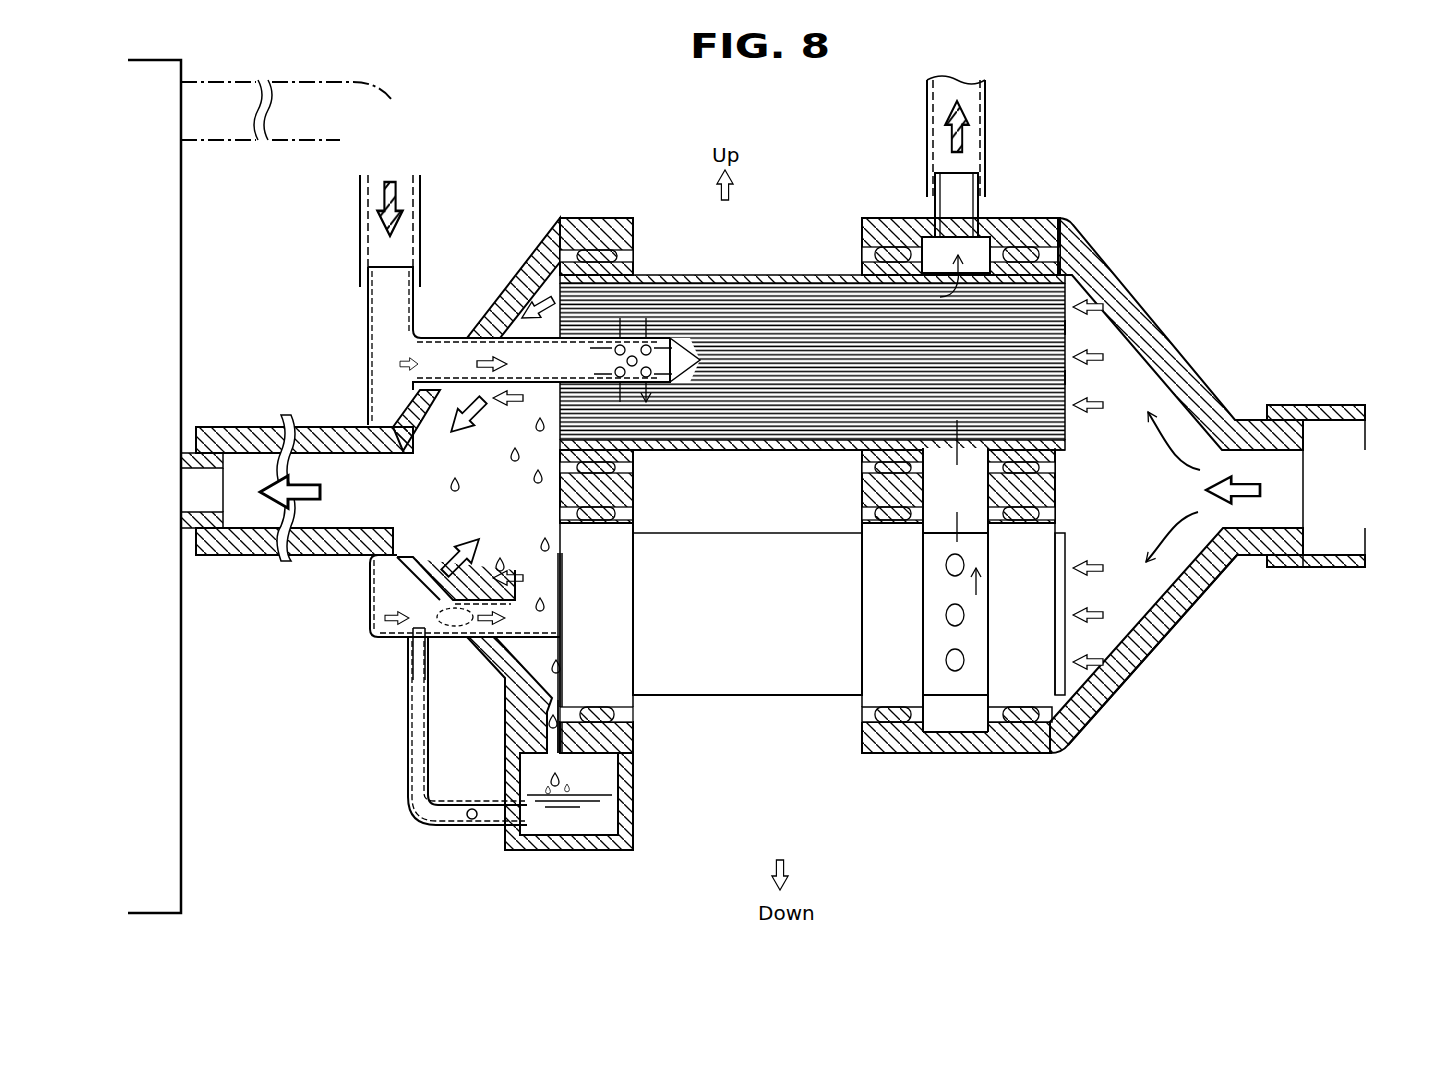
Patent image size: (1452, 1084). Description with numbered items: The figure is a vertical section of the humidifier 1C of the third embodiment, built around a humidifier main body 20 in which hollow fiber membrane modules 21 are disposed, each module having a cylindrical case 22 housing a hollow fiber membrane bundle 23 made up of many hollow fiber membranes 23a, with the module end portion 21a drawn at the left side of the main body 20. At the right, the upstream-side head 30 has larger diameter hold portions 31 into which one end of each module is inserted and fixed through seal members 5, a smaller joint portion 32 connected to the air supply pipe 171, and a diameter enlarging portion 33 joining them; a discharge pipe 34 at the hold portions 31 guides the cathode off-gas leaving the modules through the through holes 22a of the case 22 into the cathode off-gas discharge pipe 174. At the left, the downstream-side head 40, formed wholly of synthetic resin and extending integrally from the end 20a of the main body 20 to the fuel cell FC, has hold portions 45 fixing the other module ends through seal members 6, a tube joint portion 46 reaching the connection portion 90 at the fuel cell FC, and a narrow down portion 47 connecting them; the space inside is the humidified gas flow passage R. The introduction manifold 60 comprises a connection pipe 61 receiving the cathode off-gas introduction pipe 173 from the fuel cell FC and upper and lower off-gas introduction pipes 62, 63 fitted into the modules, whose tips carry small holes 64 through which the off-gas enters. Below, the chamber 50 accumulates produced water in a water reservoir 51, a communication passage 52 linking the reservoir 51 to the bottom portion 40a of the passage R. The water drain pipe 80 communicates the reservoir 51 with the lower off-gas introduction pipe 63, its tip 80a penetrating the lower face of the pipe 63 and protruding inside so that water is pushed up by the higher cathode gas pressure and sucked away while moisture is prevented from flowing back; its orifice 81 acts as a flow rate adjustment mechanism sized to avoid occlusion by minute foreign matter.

The humidifier 1C is at (1118, 172).
The seal member 5 is at (893, 247).
The seal member 6 is at (598, 255).
The humidifier main body 20 is at (750, 714).
The end of humidifier main body 20a is at (563, 222).
The hollow fiber membrane module 21 is at (767, 274).
The end plate 21a is at (562, 552).
The case 22 is at (690, 541).
The through hole 22a is at (980, 735).
The hollow fiber membrane bundle 23 is at (1067, 292).
The hollow fiber membrane 23a is at (1067, 330).
The upstream-side head 30 is at (1160, 325).
The hold portion 31 is at (870, 237).
The joint portion 32 is at (1247, 560).
The diameter enlarging portion 33 is at (1176, 617).
The discharge pipe 34 is at (980, 187).
The downstream-side head 40 is at (507, 232).
The bottom portion of humidified gas flow passage 40a is at (518, 710).
The hold portion 45 is at (618, 243).
The tube joint portion 46 is at (396, 424).
The narrow down portion 47 is at (500, 265).
The chamber 50 is at (628, 850).
The water reservoir 51 is at (606, 835).
The communication passage 52 is at (504, 760).
The introduction manifold 60 is at (366, 578).
The connection pipe 61 is at (366, 300).
The off-gas introduction pipe 62 is at (447, 336).
The off-gas introduction pipe 63 is at (386, 640).
The small hole 64 is at (660, 345).
The water drain pipe 80 is at (406, 745).
The tip of water drain pipe 80a is at (427, 658).
The orifice 81 is at (466, 828).
The connection portion 90 is at (222, 427).
The air supply pipe 171 is at (1298, 405).
The cathode off-gas introduction pipe 173 is at (360, 206).
The cathode off-gas discharge pipe 174 is at (925, 112).
The fuel cell FC is at (197, 852).
The humidified gas flow passage R is at (430, 623).